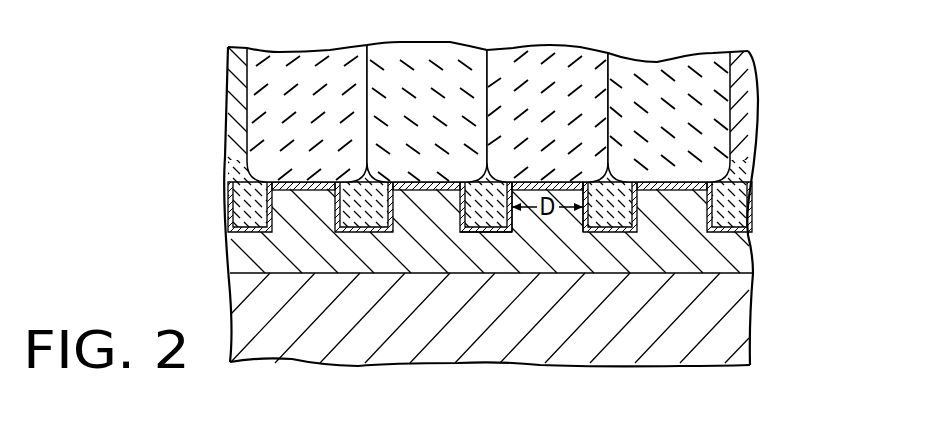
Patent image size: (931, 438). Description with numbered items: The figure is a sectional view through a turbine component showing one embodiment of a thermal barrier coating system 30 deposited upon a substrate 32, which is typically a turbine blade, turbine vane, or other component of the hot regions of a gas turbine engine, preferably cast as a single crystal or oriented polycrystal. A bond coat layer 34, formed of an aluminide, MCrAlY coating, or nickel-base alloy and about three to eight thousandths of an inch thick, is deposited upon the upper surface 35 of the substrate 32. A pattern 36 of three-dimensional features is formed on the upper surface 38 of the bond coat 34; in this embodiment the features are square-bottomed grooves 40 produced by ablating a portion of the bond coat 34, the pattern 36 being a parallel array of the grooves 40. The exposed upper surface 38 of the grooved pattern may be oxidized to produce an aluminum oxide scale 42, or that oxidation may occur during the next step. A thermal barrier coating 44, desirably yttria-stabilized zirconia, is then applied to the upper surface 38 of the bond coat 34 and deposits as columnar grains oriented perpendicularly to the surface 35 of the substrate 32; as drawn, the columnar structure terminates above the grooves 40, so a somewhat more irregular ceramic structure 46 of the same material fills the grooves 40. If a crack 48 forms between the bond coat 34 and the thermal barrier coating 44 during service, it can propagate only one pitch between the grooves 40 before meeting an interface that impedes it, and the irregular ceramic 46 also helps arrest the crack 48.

The thermal barrier coating system 30 is at (533, 204).
The substrate 32 is at (525, 318).
The bond coat layer 34 is at (459, 234).
The upper surface of the substrate 35 is at (459, 293).
The pattern of three-dimensional features 36 is at (558, 248).
The upper surface of the bond coat 38 is at (463, 193).
The square-bottomed grooves 40 is at (320, 226).
The aluminum oxide scale 42 is at (465, 217).
The thermal barrier coating 44 is at (451, 106).
The irregular ceramic structure 46 is at (478, 251).
The crack 48 is at (547, 161).